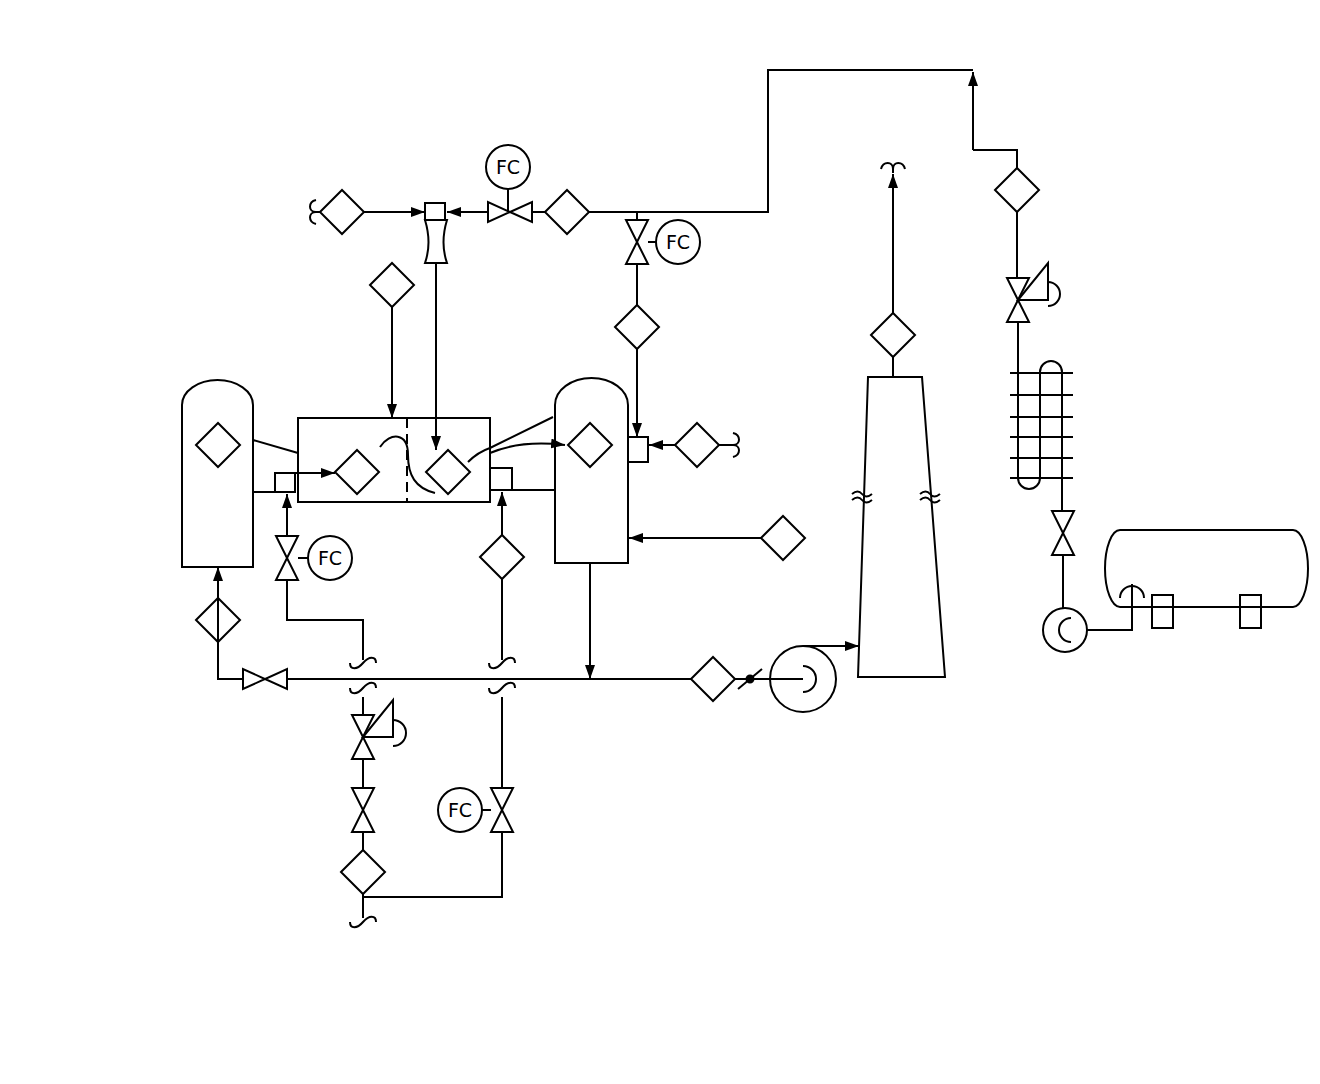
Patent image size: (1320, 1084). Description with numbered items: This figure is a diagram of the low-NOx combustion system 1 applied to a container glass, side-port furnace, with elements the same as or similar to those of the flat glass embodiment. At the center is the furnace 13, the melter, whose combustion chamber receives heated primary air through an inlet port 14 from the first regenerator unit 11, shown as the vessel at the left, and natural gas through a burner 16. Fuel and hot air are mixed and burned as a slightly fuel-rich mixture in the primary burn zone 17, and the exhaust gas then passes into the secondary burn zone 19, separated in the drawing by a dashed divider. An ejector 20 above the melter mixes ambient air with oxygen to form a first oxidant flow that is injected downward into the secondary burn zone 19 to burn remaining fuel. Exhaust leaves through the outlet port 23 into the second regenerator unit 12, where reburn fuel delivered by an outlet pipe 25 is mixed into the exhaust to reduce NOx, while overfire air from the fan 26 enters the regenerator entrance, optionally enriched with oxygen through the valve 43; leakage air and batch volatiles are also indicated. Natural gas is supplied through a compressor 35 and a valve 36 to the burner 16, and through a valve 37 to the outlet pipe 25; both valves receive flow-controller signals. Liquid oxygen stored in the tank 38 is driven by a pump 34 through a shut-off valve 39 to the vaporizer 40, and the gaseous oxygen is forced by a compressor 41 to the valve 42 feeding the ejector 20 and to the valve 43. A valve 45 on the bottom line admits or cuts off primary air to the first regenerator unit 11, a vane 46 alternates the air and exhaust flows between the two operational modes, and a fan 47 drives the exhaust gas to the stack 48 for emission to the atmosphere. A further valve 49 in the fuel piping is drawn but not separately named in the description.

The system 1 is at (235, 157).
The first regenerator unit 11 is at (200, 377).
The second regenerator unit 12 is at (601, 370).
The furnace 13 is at (330, 408).
The inlet port 14 is at (265, 427).
The burner 16 is at (283, 480).
The primary burn zone 17 is at (337, 488).
The secondary burn zone 19 is at (418, 495).
The ejector 20 is at (452, 236).
The outlet port 23 is at (520, 420).
The outlet pipe 25 is at (518, 504).
The fan 26 is at (725, 445).
The pump 34 is at (1053, 660).
The compressor 35 is at (351, 740).
The valve 36 is at (310, 582).
The valve 37 is at (513, 810).
The tank 38 is at (1198, 526).
The shut-off valve 39 is at (1078, 527).
The vaporizer 40 is at (1083, 435).
The compressor 41 is at (1057, 270).
The valve 42 is at (537, 192).
The valve 43 is at (624, 242).
The valve 45 is at (267, 695).
The vane 46 is at (753, 697).
The fan 47 is at (840, 705).
The stack 48 is at (857, 418).
The valve 49 is at (351, 813).